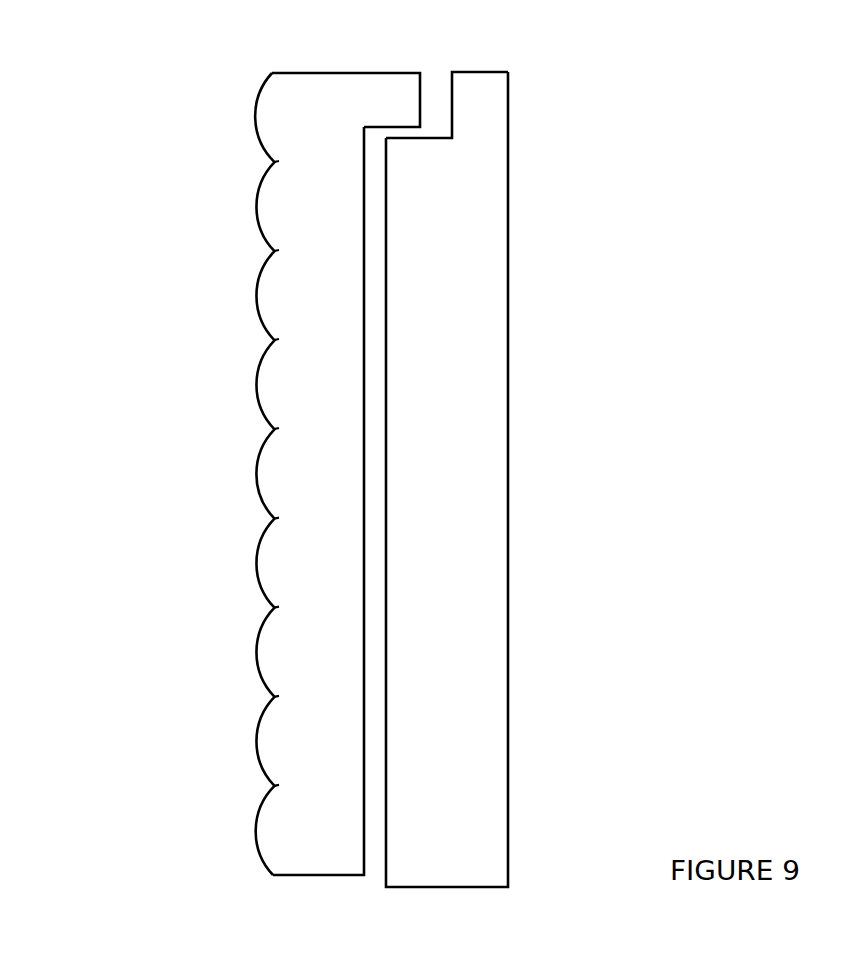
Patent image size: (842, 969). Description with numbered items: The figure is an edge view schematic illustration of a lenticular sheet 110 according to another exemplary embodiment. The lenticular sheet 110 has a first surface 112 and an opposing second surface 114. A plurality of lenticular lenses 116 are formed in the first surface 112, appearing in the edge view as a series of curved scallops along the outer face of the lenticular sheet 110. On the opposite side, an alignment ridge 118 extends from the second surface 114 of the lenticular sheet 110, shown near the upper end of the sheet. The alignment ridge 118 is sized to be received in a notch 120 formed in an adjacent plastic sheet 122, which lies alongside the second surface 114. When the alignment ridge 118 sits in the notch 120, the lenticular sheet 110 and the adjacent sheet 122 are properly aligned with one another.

The lenticular sheet 110 is at (218, 46).
The first surface 112 is at (223, 759).
The second surface 114 is at (381, 768).
The lenticular lenses 116 is at (257, 571).
The alignment ridge 118 is at (394, 88).
The notch 120 is at (438, 83).
The adjacent plastic sheet 122 is at (508, 307).